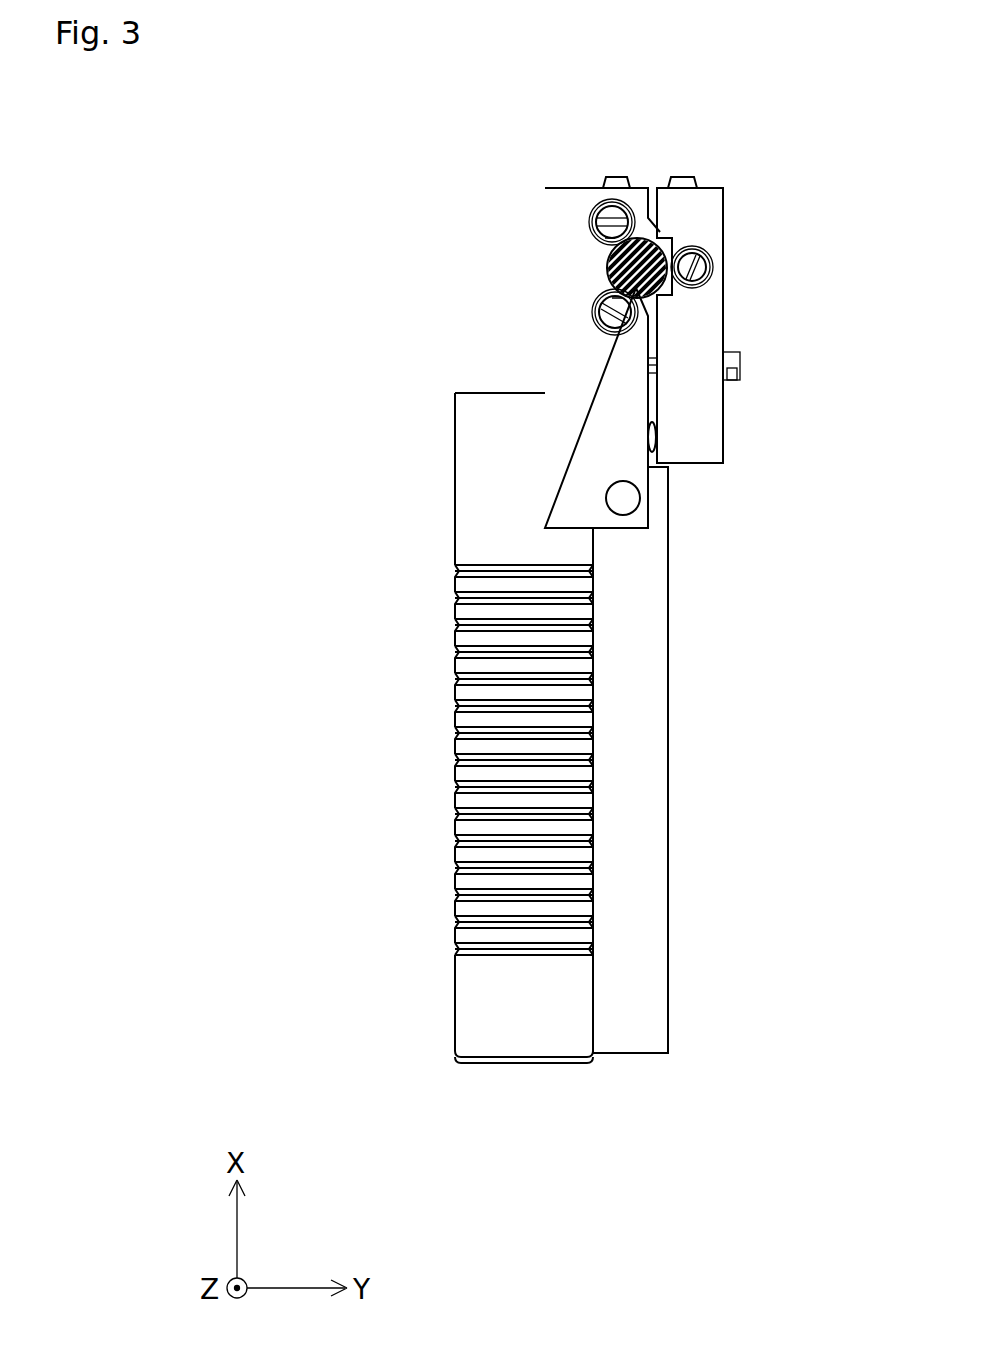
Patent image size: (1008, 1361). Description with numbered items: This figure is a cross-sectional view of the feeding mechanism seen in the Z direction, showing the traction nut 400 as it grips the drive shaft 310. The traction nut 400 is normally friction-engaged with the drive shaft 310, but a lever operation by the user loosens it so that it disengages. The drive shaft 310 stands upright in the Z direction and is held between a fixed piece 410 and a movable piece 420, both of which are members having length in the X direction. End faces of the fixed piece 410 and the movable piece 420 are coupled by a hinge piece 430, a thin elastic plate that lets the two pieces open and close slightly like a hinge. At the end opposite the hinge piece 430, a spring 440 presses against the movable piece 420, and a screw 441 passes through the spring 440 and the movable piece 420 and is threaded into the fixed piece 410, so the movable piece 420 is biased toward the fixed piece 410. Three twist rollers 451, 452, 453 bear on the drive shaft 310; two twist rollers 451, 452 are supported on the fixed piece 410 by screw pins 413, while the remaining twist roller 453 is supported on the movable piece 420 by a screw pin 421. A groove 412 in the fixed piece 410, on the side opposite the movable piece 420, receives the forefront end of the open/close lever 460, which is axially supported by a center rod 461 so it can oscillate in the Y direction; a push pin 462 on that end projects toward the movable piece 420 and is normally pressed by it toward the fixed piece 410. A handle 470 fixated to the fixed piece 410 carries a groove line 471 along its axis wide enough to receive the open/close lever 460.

The traction nut 400 is at (443, 198).
The drive shaft 310 is at (649, 238).
The fixed piece 410 is at (557, 315).
The groove 412 is at (640, 473).
The screw pins 413 is at (590, 312).
The movable piece 420 is at (710, 330).
The screw pin 421 is at (712, 276).
The hinge piece 430 is at (656, 187).
The spring 440 is at (710, 365).
The screw 441 is at (735, 375).
The twist roller 451 is at (600, 330).
The twist roller 452 is at (592, 222).
The twist roller 453 is at (712, 262).
The open/close lever 460 is at (648, 926).
The center rod 461 is at (628, 505).
The push pin 462 is at (657, 437).
The handle 470 is at (470, 988).
The groove line 471 is at (596, 1048).